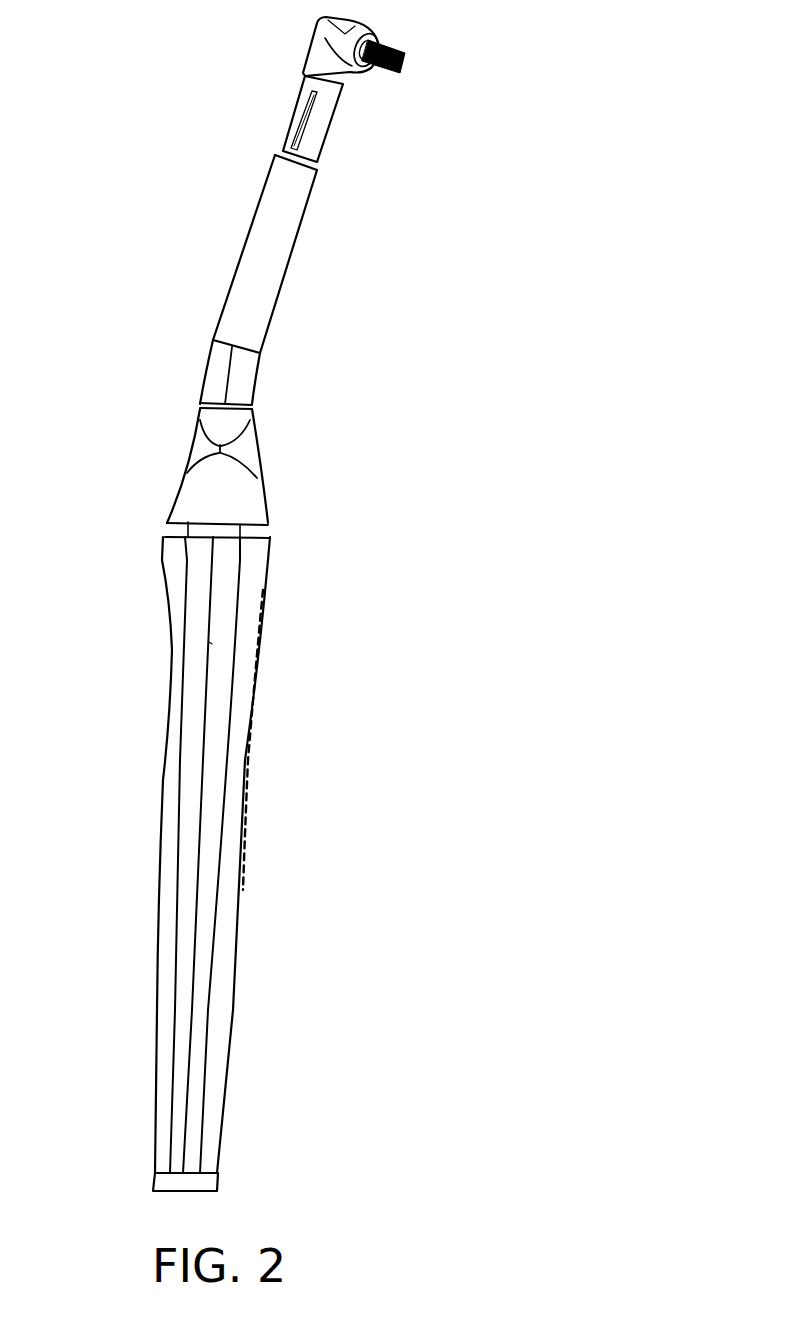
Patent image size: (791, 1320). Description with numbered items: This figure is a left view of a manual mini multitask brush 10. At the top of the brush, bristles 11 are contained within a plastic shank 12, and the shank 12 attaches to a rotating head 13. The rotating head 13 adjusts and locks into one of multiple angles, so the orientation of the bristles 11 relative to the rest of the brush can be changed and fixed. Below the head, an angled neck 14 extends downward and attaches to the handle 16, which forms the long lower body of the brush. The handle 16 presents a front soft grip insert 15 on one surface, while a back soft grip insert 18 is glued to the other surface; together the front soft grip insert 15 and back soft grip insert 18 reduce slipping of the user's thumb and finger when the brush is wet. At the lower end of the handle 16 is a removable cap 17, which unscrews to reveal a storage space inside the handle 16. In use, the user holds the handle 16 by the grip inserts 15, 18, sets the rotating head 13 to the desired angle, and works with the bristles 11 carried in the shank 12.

The manual mini multitask brush 10 is at (287, 597).
The bristles 11 is at (403, 54).
The plastic shank 12 is at (353, 67).
The rotating head 13 is at (310, 88).
The angled neck 14 is at (243, 385).
The front soft grip insert 15 is at (257, 628).
The handle 16 is at (172, 990).
The removable cap 17 is at (207, 1184).
The back soft grip insert 18 is at (172, 670).